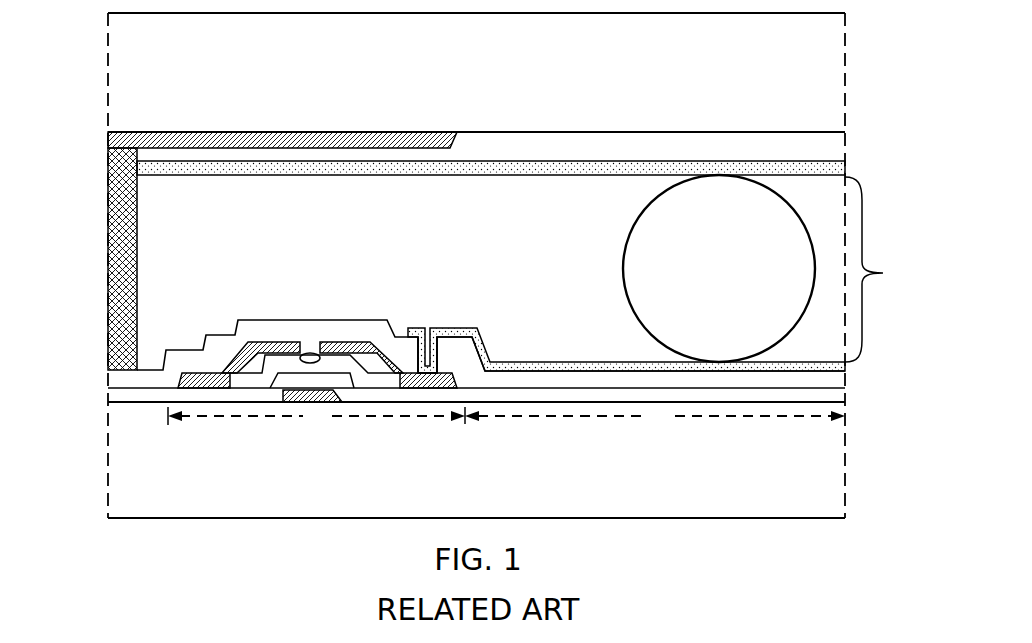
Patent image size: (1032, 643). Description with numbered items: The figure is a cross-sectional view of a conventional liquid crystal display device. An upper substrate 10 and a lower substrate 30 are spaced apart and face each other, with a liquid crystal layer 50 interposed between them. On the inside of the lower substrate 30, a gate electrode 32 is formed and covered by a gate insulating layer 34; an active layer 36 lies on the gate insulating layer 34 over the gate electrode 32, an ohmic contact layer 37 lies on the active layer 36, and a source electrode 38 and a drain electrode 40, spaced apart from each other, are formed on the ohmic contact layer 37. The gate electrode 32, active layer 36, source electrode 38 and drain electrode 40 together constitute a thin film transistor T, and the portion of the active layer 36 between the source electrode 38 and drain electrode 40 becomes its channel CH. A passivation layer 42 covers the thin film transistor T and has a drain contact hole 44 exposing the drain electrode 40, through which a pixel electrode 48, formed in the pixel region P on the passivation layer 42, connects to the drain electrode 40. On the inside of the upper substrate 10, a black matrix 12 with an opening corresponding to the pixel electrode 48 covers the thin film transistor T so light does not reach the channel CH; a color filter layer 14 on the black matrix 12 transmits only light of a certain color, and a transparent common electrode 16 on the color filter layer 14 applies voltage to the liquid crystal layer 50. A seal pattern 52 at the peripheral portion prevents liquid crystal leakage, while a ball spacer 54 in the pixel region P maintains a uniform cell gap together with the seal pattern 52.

The upper substrate 10 is at (506, 81).
The black matrix 12 is at (329, 132).
The color filter layer 14 is at (620, 144).
The common electrode 16 is at (517, 176).
The lower substrate 30 is at (488, 473).
The gate electrode 32 is at (337, 403).
The gate insulating layer 34 is at (414, 392).
The active layer 36 is at (242, 381).
The ohmic contact layer 37 is at (252, 373).
The source electrode 38 is at (276, 341).
The drain electrode 40 is at (348, 343).
The passivation layer 42 is at (382, 331).
The drain contact hole 44 is at (431, 316).
The pixel electrode 48 is at (566, 360).
The liquid crystal layer 50 is at (883, 269).
The seal pattern 52 is at (108, 248).
The ball spacer 54 is at (633, 224).
The channel CH is at (308, 352).
The thin film transistor T is at (316, 418).
The pixel region P is at (655, 417).